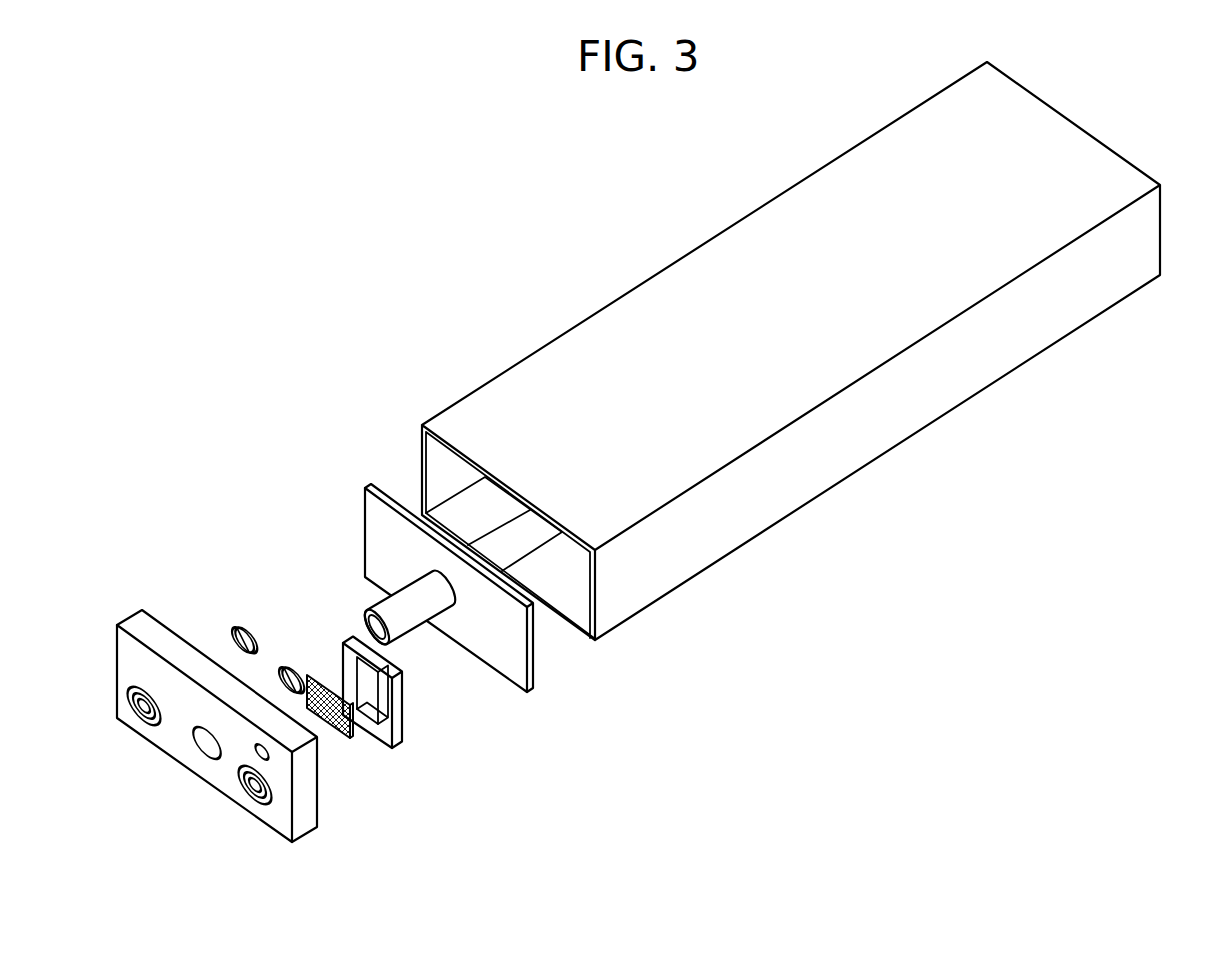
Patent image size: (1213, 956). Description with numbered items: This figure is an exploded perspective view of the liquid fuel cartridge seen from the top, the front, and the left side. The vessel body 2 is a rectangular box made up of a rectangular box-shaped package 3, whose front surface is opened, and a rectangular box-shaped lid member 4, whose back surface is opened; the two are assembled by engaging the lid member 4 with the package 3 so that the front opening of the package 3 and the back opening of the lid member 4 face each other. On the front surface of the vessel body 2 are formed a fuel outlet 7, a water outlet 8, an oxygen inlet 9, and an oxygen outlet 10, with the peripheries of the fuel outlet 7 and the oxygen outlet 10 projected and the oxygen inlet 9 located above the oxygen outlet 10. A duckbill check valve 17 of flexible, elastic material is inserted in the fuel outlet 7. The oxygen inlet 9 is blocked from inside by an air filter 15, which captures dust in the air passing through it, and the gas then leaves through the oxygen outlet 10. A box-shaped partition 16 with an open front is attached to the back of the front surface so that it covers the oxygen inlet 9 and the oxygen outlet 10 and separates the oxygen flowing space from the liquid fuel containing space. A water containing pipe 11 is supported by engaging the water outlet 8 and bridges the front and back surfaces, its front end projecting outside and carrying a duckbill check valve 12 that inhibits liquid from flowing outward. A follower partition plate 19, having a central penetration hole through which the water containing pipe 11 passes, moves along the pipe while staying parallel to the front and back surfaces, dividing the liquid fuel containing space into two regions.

The vessel body 2 is at (622, 777).
The package 3 is at (609, 623).
The lid member 4 is at (308, 815).
The fuel outlet 7 is at (123, 718).
The water outlet 8 is at (195, 748).
The oxygen inlet 9 is at (270, 757).
The oxygen outlet 10 is at (245, 793).
The water containing pipe 11 is at (380, 608).
The check valve 12 is at (290, 667).
The air filter 15 is at (349, 738).
The partition 16 is at (407, 702).
The check valve 17 is at (237, 630).
The follower partition plate 19 is at (366, 486).